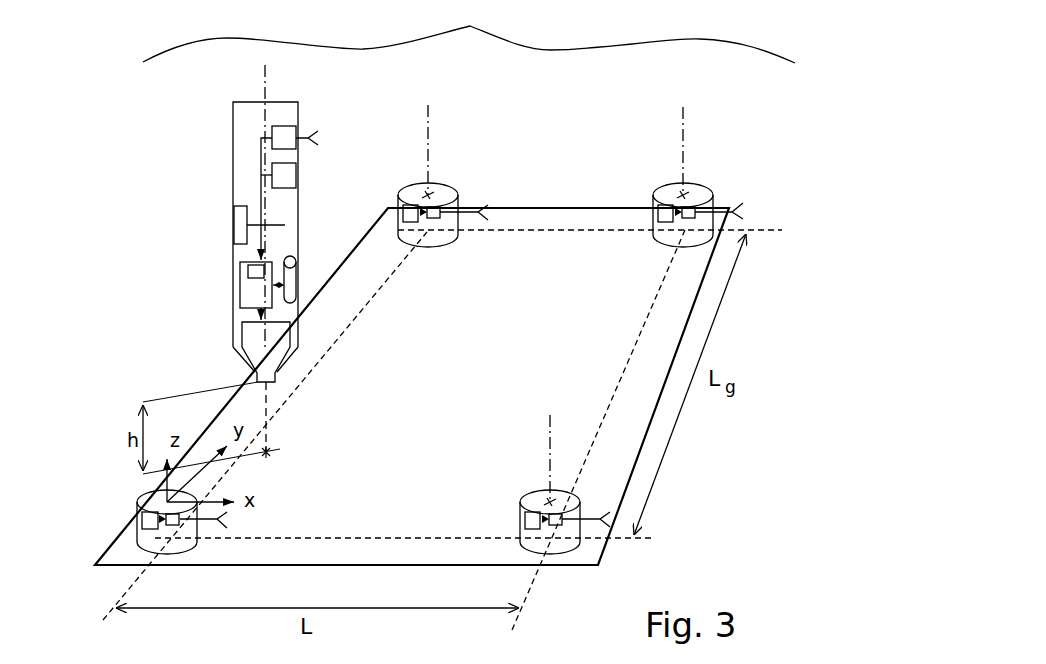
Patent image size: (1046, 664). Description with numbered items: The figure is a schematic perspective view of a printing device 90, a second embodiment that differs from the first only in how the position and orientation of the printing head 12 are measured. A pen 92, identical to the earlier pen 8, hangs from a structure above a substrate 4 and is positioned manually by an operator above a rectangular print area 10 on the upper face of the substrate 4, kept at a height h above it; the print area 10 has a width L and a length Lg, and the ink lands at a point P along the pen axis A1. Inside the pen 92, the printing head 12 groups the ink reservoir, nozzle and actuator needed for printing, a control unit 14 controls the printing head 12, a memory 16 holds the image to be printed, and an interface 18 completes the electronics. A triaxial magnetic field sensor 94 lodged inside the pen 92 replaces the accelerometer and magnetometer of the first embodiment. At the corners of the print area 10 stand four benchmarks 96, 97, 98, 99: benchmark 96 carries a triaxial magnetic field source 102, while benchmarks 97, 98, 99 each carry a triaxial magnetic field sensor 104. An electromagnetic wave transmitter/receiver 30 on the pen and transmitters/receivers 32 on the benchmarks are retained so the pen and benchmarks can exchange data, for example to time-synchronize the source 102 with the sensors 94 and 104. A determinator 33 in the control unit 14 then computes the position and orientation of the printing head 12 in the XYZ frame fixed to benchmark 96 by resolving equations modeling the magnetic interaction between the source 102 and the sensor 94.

The printing device 90 is at (469, 34).
The pen 8 is at (258, 218).
The pen 92 is at (231, 150).
The axis of the printing head A1 is at (263, 88).
The electromagnetic wave transmitter/receiver 30 is at (282, 126).
The triaxial magnetic field sensor 94 is at (278, 175).
The interface 18 is at (238, 225).
The control unit 14 is at (242, 292).
The determinator 33 is at (248, 272).
The memory 16 is at (292, 278).
The printing head 12 is at (248, 343).
The substrate 4 is at (604, 552).
The print area 10 is at (575, 228).
The benchmark 99 is at (449, 181).
The benchmark 98 is at (706, 181).
The benchmark 97 is at (586, 496).
The benchmark 96 is at (131, 506).
The triaxial magnetic field sensor 104 is at (410, 206).
The triaxial magnetic field source 102 is at (140, 520).
The electromagnetic wave transmitter/receiver 32 is at (433, 222).